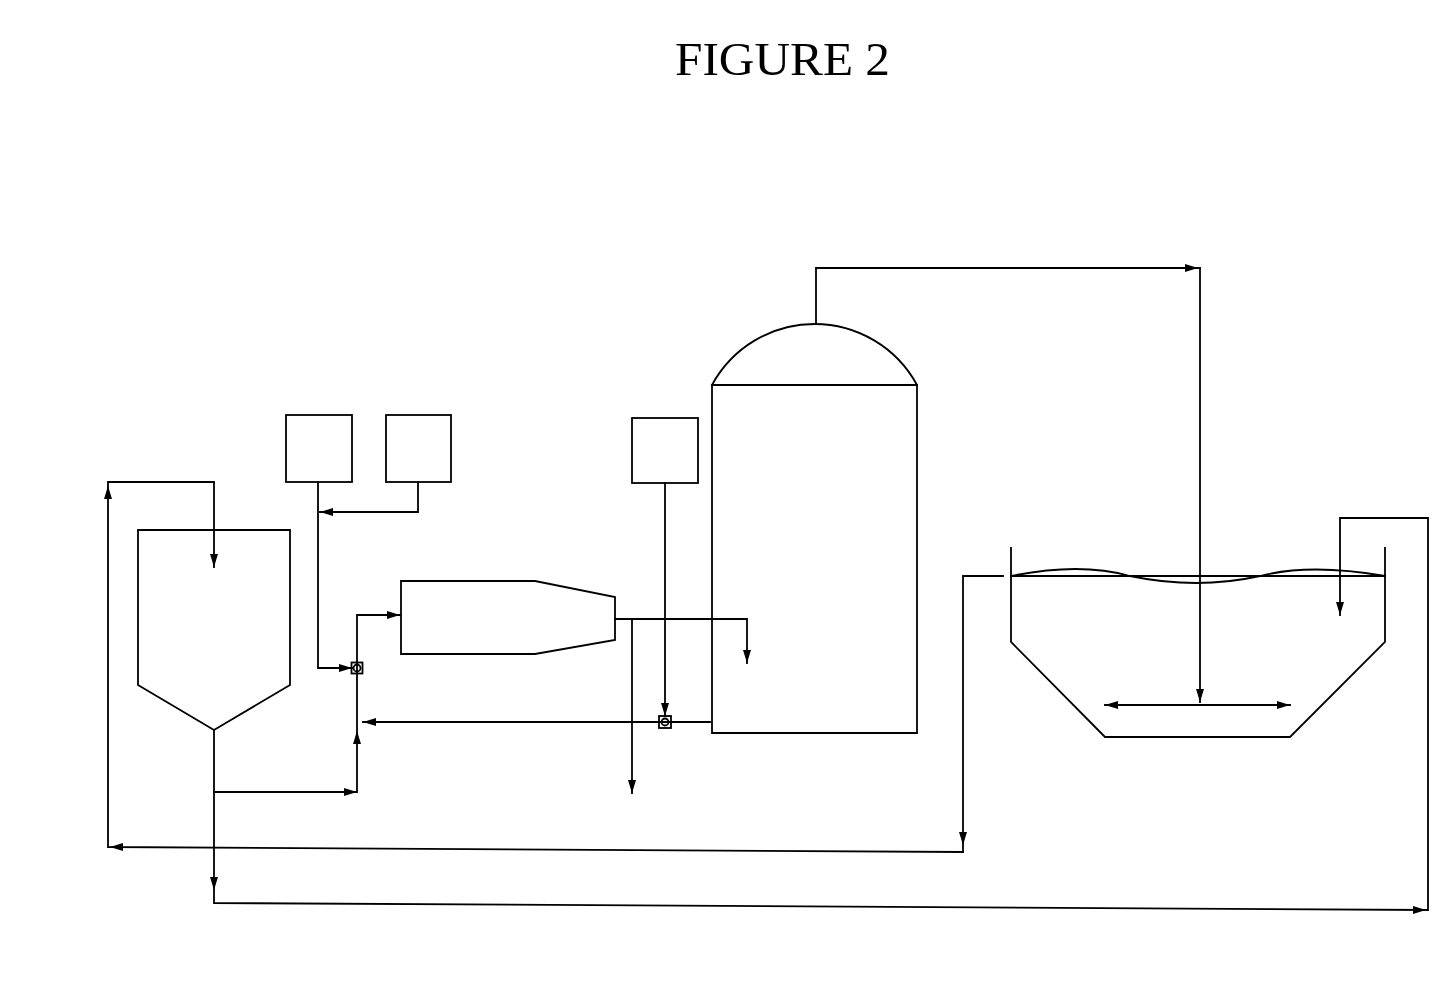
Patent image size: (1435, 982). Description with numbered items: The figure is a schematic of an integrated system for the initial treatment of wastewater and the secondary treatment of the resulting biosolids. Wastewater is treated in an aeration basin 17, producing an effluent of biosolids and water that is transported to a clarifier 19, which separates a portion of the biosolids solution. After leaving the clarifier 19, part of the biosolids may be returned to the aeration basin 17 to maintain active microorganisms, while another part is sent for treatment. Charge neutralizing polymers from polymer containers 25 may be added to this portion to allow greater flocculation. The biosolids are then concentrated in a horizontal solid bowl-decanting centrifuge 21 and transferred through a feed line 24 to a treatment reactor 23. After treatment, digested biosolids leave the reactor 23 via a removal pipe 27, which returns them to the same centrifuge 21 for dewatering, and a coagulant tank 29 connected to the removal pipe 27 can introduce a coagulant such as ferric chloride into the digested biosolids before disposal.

The aeration basin 17 is at (1105, 560).
The clarifier 19 is at (257, 523).
The horizontal solid bowl-decanting centrifuge 21 is at (487, 581).
The treatment reactor 23 is at (918, 442).
The feed line 24 is at (647, 615).
The polymer containers 25 is at (418, 415).
The removal pipe 27 is at (487, 724).
The coagulant tank 29 is at (667, 418).